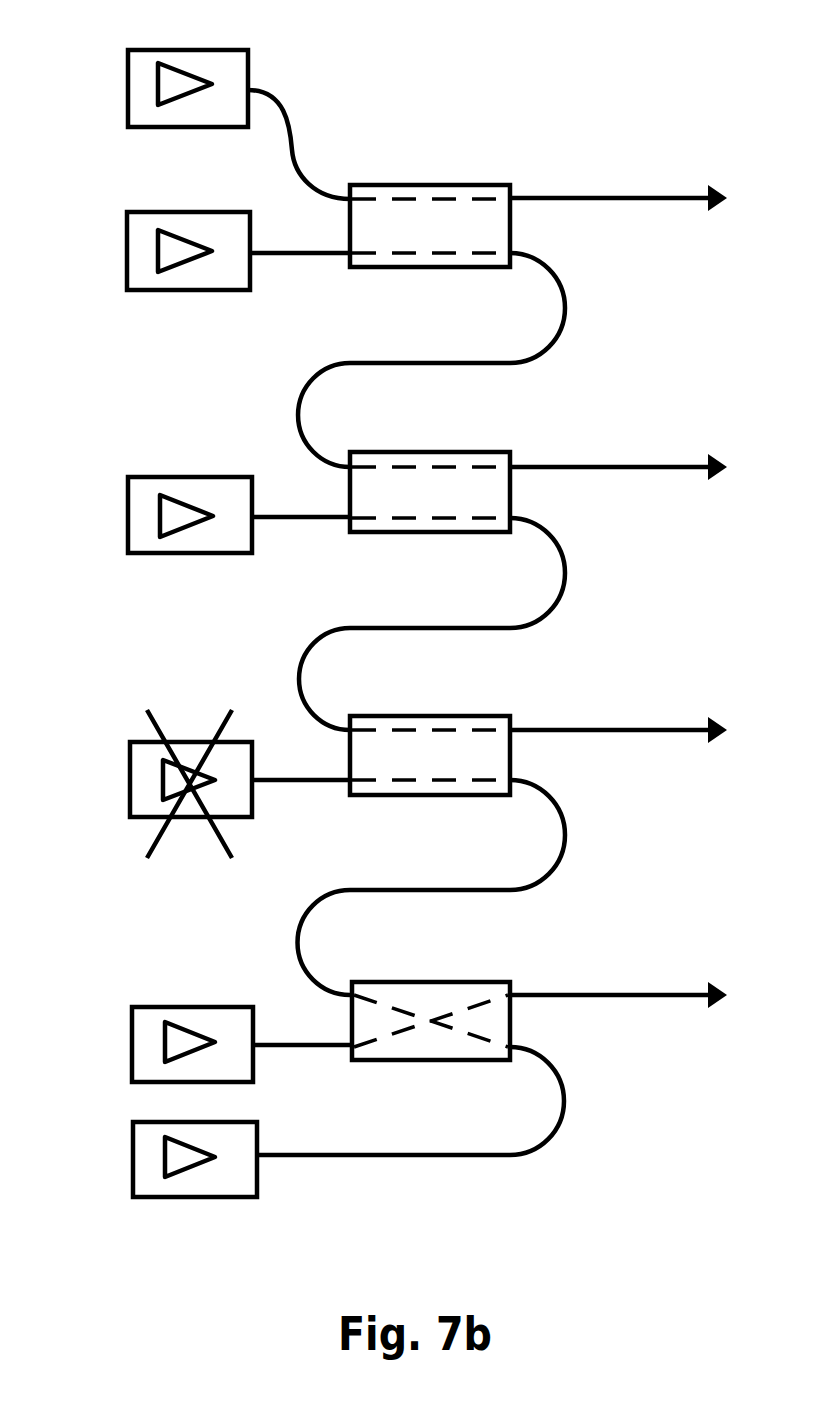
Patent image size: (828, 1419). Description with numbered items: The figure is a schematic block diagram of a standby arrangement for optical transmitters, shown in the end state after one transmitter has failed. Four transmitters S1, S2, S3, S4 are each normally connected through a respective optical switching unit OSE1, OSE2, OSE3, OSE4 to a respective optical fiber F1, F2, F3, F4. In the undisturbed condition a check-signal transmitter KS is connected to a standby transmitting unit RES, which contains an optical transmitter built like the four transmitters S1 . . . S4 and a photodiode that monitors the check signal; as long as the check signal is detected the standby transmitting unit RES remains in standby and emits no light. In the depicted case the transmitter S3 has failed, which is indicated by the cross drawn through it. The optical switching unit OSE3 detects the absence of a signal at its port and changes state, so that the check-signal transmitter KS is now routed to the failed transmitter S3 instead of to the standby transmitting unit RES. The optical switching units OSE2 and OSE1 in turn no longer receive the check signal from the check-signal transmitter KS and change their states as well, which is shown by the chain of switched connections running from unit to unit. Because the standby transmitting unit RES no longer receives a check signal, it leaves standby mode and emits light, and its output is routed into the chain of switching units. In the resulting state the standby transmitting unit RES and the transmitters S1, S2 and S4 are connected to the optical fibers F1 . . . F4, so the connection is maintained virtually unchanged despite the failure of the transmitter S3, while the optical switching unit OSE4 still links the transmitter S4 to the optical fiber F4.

The standby transmitting unit RES is at (152, 70).
The transmitter S1 is at (152, 237).
The transmitter S2 is at (153, 502).
The transmitter S3 is at (155, 765).
The transmitter S4 is at (155, 1030).
The check-signal transmitter KS is at (148, 1150).
The optical switching unit OSE1 is at (392, 185).
The optical switching unit OSE2 is at (392, 452).
The optical switching unit OSE3 is at (392, 716).
The optical switching unit OSE4 is at (392, 982).
The optical fiber F1 is at (633, 198).
The optical fiber F2 is at (633, 467).
The optical fiber F3 is at (633, 730).
The optical fiber F4 is at (633, 995).